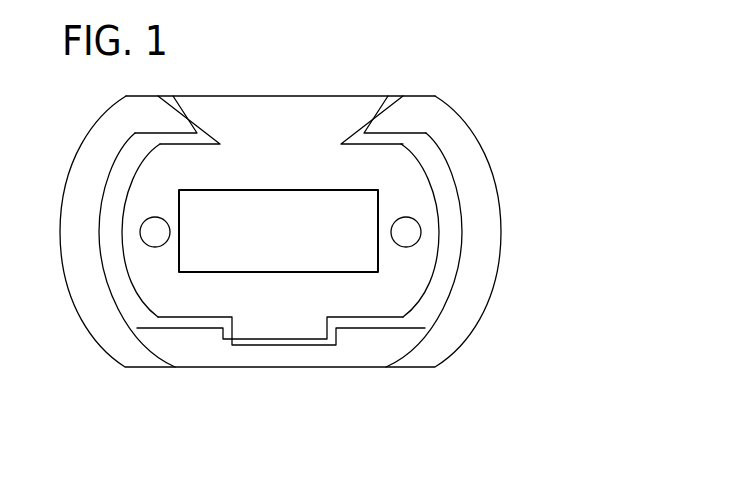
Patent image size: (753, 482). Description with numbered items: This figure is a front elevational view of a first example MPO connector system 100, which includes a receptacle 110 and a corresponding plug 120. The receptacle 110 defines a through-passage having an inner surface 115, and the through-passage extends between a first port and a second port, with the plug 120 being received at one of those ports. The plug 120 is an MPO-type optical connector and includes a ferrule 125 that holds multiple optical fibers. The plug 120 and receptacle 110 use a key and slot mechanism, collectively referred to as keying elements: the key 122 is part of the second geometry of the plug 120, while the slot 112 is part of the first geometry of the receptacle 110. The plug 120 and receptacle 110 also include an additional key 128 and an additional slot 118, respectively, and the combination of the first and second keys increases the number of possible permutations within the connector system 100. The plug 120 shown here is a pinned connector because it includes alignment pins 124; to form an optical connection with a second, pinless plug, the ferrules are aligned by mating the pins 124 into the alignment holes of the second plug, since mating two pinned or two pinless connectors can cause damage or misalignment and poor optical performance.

The connector system 100 is at (343, 243).
The receptacle 110 is at (472, 140).
The slot 112 is at (240, 343).
The inner surface 115 is at (452, 271).
The additional slot 118 is at (377, 119).
The plug 120 is at (435, 205).
The key 122 is at (283, 337).
The alignment pins 124 is at (147, 227).
The ferrule 125 is at (298, 240).
The additional key 128 is at (257, 96).